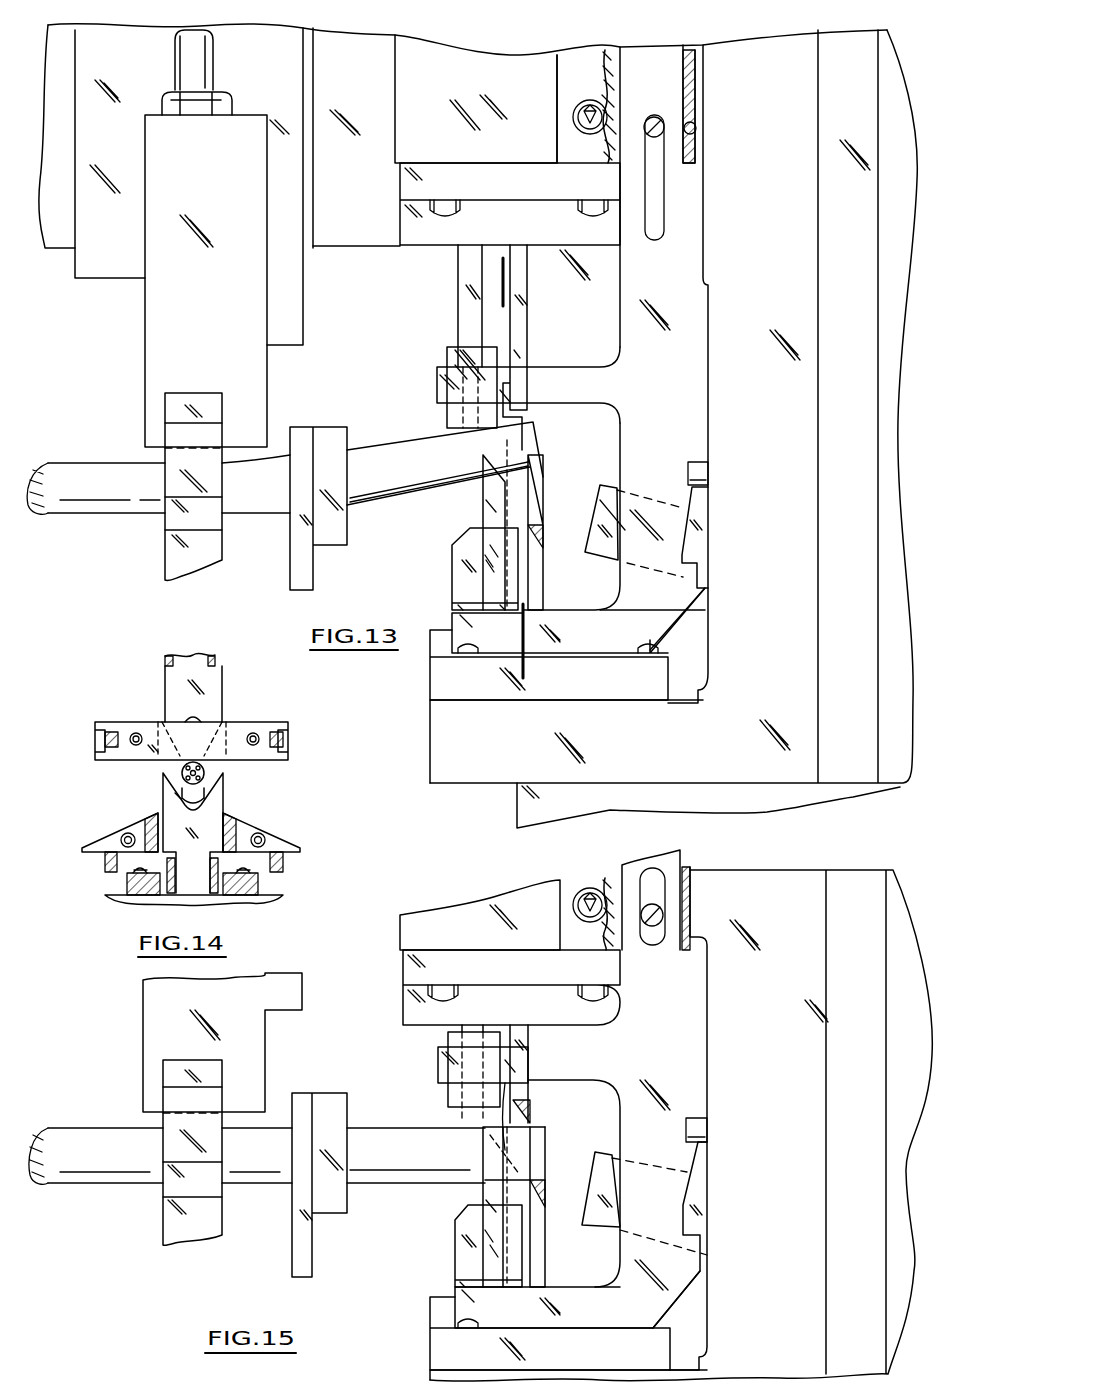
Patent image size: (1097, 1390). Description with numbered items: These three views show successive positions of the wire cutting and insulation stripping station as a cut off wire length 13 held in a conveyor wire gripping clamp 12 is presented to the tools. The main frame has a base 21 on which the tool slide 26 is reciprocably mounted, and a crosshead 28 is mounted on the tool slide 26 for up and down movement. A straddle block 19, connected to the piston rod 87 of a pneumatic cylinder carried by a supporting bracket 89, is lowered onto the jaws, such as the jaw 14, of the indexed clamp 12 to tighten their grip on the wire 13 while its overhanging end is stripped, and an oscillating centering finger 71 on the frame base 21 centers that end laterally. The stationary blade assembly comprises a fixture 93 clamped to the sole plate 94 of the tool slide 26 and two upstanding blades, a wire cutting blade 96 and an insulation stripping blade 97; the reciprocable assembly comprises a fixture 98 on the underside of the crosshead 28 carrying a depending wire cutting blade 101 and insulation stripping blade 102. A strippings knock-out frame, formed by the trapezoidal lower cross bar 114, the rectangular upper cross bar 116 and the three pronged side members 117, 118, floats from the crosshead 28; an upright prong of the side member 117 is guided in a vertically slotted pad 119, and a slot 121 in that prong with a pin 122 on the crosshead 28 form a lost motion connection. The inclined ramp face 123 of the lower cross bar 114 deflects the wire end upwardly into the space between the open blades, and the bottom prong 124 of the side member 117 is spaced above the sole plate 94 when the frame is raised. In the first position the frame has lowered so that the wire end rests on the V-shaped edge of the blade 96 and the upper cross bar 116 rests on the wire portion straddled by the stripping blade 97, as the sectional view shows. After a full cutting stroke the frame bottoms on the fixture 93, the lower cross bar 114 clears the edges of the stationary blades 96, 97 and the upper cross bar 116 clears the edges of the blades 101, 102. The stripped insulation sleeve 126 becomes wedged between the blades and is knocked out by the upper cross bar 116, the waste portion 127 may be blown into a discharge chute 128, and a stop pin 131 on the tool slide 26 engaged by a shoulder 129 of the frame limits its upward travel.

In FIG. 13, the wire gripping clamp 12 is at (160, 557).
In FIG. 15, the wire gripping clamp 12 is at (160, 1221).
In FIG. 13, the cut off wire length 13 is at (87, 505).
In FIG. 14, the cut off wire length 13 is at (180, 766).
In FIG. 15, the cut off wire length 13 is at (93, 1172).
In FIG. 13, the wire gripping jaw 14 is at (507, 268).
In FIG. 13, the straddle block 19 is at (170, 460).
In FIG. 15, the straddle block 19 is at (168, 1125).
In FIG. 13, the base 21 is at (517, 812).
In FIG. 13, the tool slide 26 is at (842, 40).
In FIG. 15, the tool slide 26 is at (838, 877).
In FIG. 13, the crosshead 28 is at (443, 77).
In FIG. 15, the crosshead 28 is at (443, 940).
In FIG. 13, the oscillating finger 71 is at (313, 583).
In FIG. 15, the oscillating finger 71 is at (313, 1272).
In FIG. 13, the piston rod 87 is at (180, 66).
In FIG. 13, the supporting bracket 89 is at (283, 77).
In FIG. 15, the supporting bracket 89 is at (285, 980).
In FIG. 13, the fixture 93 is at (436, 674).
In FIG. 14, the fixture 93 is at (215, 896).
In FIG. 15, the fixture 93 is at (432, 1338).
In FIG. 13, the sole plate 94 is at (436, 727).
In FIG. 14, the sole plate 94 is at (130, 901).
In FIG. 15, the sole plate 94 is at (450, 1376).
In FIG. 13, the wire cutting blade 96 is at (543, 505).
In FIG. 15, the wire cutting blade 96 is at (545, 1212).
In FIG. 13, the insulation stripping blade 97 is at (488, 502).
In FIG. 14, the insulation stripping blade 97 is at (220, 798).
In FIG. 15, the insulation stripping blade 97 is at (490, 1195).
In FIG. 14, the fixture 98 is at (216, 658).
In FIG. 15, the fixture 98 is at (403, 1008).
In FIG. 13, the wire cutting blade 101 is at (530, 300).
In FIG. 15, the wire cutting blade 101 is at (532, 1108).
In FIG. 13, the insulation stripping blade 102 is at (462, 285).
In FIG. 14, the insulation stripping blade 102 is at (222, 693).
In FIG. 15, the insulation stripping blade 102 is at (470, 1122).
In FIG. 13, the lower cross bar 114 is at (455, 572).
In FIG. 14, the lower cross bar 114 is at (248, 830).
In FIG. 15, the lower cross bar 114 is at (457, 1250).
In FIG. 13, the upper cross bar 116 is at (440, 412).
In FIG. 14, the upper cross bar 116 is at (268, 722).
In FIG. 15, the upper cross bar 116 is at (440, 1052).
In FIG. 13, the side member 117 is at (672, 425).
In FIG. 14, the side member 117 is at (103, 739).
In FIG. 15, the side member 117 is at (672, 1043).
In FIG. 14, the side member 118 is at (288, 739).
In FIG. 13, the vertically slotted pad 119 is at (557, 72).
In FIG. 15, the vertically slotted pad 119 is at (557, 905).
In FIG. 13, the slot 121 is at (662, 198).
In FIG. 15, the slot 121 is at (662, 872).
In FIG. 13, the pin 122 is at (664, 122).
In FIG. 15, the pin 122 is at (665, 915).
In FIG. 13, the inclined ramp face 123 is at (462, 544).
In FIG. 14, the inclined ramp face 123 is at (285, 838).
In FIG. 15, the inclined ramp face 123 is at (458, 1226).
In FIG. 13, the bottom prong 124 is at (573, 618).
In FIG. 14, the bottom prong 124 is at (103, 866).
In FIG. 15, the bottom prong 124 is at (545, 1320).
In FIG. 15, the stripped insulation sleeve 126 is at (508, 1085).
In FIG. 15, the waste portion 127 is at (535, 1140).
In FIG. 13, the discharge chute 128 is at (602, 484).
In FIG. 15, the discharge chute 128 is at (597, 1151).
In FIG. 13, the shoulder 129 is at (693, 556).
In FIG. 15, the shoulder 129 is at (700, 1237).
In FIG. 13, the stop pin 131 is at (698, 470).
In FIG. 15, the stop pin 131 is at (700, 1118).